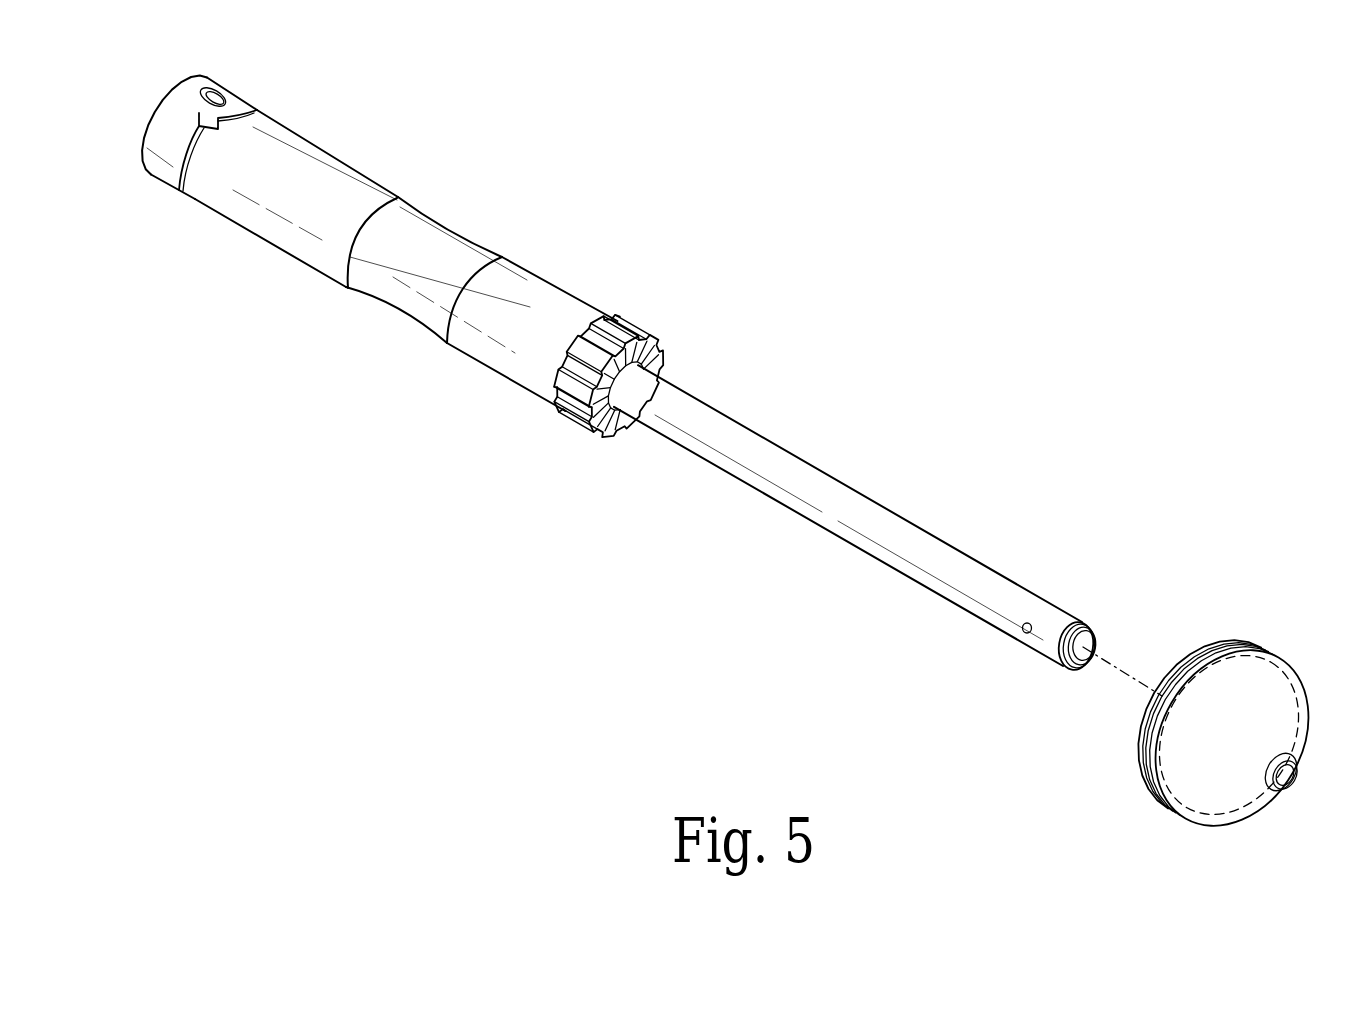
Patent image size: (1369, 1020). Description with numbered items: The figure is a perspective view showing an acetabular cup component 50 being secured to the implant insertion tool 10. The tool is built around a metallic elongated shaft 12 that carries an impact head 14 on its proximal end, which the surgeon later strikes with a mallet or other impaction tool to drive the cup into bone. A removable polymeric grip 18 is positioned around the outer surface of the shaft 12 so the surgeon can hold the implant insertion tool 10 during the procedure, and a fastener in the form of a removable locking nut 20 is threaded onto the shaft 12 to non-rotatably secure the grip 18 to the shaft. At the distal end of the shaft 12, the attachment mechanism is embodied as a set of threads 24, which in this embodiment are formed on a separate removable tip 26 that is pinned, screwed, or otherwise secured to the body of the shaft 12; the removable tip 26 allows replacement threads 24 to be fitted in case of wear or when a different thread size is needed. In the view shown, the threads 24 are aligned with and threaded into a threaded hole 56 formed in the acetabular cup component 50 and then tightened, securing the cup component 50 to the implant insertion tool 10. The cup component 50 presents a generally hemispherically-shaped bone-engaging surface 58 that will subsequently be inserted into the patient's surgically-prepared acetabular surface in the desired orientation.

The implant insertion tool 10 is at (534, 164).
The elongated shaft 12 is at (938, 550).
The impact head 14 is at (163, 116).
The removable polymeric grip 18 is at (434, 249).
The removable locking nut 20 is at (621, 322).
The threads 24 is at (1082, 630).
The removable tip 26 is at (1063, 665).
The acetabular cup component 50 is at (1284, 694).
The threaded hole 56 is at (1293, 777).
The bone-engaging surface 58 is at (1197, 793).